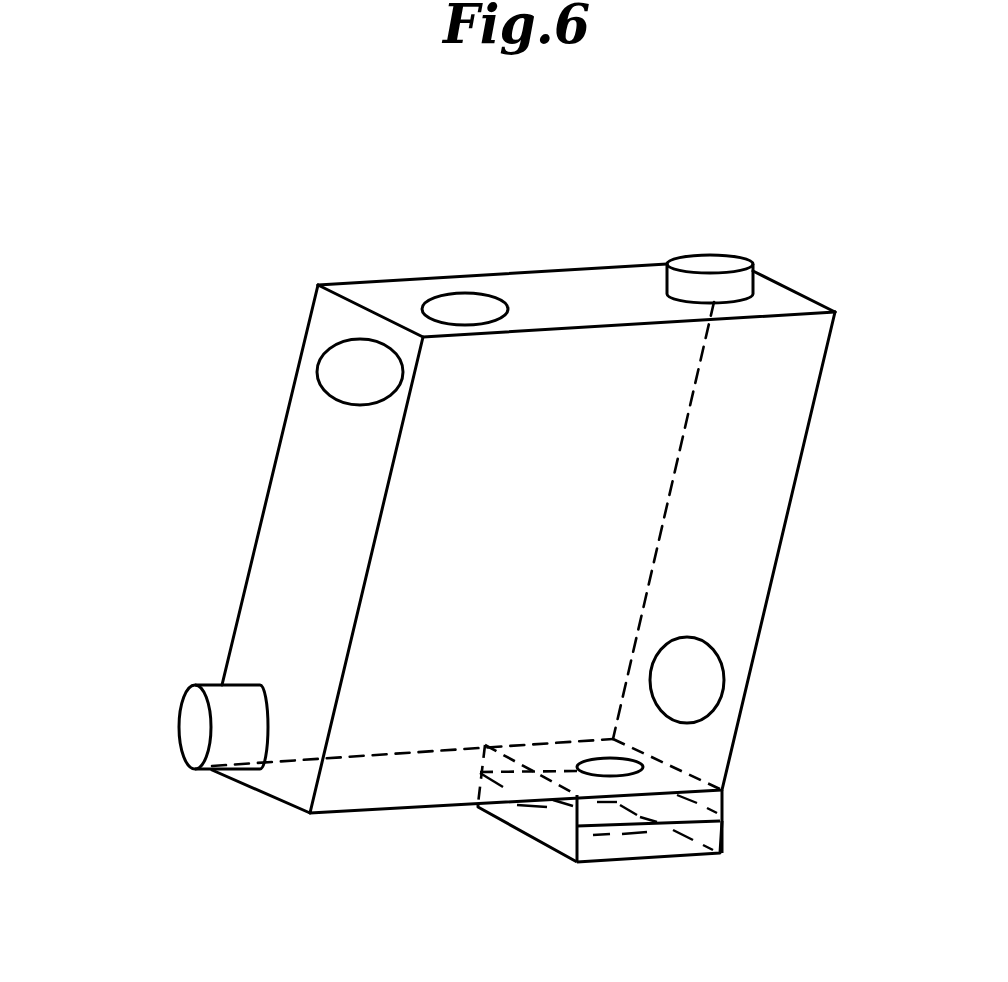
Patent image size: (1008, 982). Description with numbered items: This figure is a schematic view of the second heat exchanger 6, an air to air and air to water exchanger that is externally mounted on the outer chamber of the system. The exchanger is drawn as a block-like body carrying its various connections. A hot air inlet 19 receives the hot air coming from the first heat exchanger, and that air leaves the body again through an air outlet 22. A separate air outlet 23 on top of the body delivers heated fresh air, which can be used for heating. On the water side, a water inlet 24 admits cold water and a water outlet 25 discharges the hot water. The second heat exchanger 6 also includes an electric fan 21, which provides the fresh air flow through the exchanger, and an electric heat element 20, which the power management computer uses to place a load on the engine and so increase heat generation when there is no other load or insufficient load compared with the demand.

The second heat exchanger 6 is at (250, 493).
The hot air inlet 19 is at (327, 365).
The electric heat element 20 is at (722, 793).
The electric fan 21 is at (722, 838).
The air outlet 22 is at (723, 693).
The air outlet 23 is at (458, 313).
The water inlet 24 is at (714, 250).
The water outlet 25 is at (178, 725).